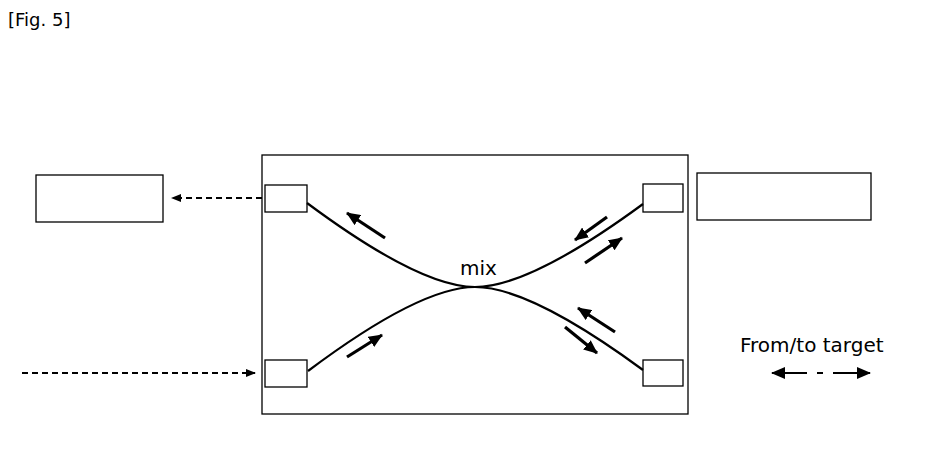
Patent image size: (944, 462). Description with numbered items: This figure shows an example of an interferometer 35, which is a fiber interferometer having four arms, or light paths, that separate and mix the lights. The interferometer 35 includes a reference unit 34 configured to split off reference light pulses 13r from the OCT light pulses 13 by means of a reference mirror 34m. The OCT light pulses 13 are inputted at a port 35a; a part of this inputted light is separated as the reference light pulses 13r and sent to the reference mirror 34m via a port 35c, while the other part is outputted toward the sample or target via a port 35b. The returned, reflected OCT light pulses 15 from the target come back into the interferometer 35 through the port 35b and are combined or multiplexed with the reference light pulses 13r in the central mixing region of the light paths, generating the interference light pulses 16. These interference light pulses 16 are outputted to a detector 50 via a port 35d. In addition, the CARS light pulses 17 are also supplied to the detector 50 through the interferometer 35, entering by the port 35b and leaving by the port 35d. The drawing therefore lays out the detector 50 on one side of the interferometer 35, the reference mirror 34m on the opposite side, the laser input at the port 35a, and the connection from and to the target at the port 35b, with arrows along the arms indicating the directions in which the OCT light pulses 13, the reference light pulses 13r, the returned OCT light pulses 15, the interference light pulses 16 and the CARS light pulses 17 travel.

The interferometer 35 is at (455, 136).
The reference unit 34 is at (505, 215).
The reference mirror 34m is at (762, 180).
The detector 50 is at (118, 177).
The port 35a is at (288, 368).
The port 35b is at (670, 367).
The port 35c is at (662, 193).
The port 35d is at (283, 193).
The OCT light pulses 13 is at (368, 325).
The reference light pulses 13r is at (623, 212).
The returned OCT light pulses 15 is at (548, 302).
The interference light pulses 16 is at (323, 213).
The CARS light pulses 17 is at (390, 253).